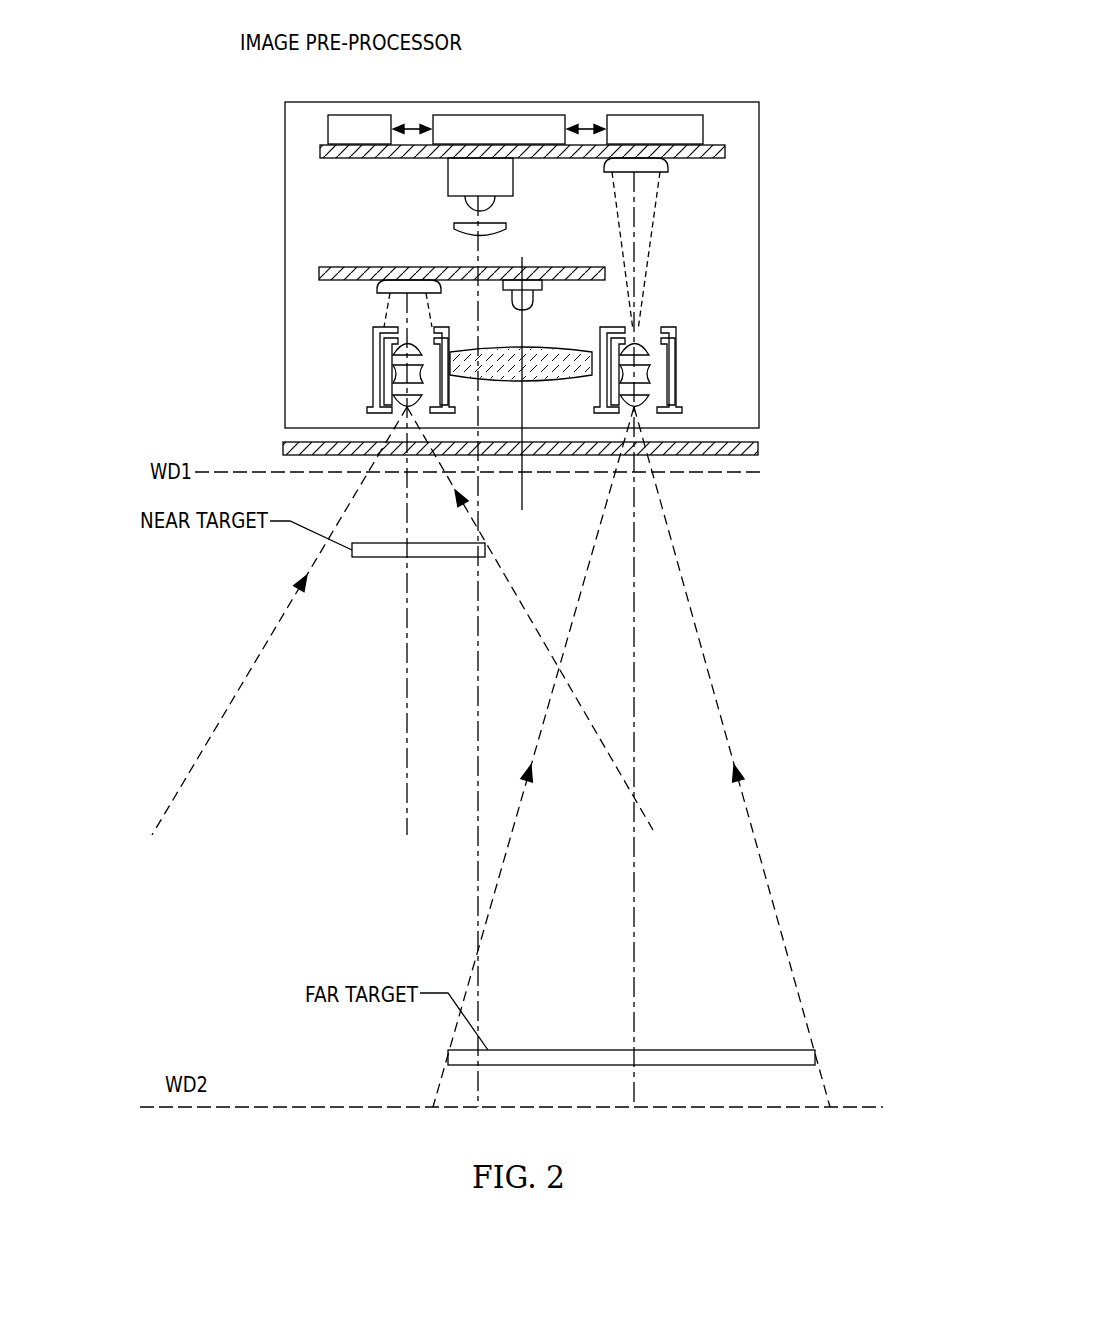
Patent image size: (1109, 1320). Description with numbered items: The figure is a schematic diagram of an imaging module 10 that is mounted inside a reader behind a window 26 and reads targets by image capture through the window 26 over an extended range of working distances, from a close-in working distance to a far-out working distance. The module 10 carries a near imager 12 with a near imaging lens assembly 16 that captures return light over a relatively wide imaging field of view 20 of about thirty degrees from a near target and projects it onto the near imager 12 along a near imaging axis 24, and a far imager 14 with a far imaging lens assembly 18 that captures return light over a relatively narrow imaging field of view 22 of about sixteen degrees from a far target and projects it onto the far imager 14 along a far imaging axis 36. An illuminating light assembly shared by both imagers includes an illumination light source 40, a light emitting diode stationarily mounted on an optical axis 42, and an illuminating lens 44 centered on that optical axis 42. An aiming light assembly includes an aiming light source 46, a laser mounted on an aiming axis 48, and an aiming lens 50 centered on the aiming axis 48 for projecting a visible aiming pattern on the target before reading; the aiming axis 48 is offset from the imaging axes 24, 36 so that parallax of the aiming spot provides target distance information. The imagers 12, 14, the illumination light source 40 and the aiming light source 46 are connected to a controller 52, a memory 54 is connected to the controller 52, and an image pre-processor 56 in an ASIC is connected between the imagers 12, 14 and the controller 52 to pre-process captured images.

The imaging module 10 is at (185, 43).
The near imager 12 is at (377, 287).
The far imager 14 is at (668, 163).
The near imaging lens assembly 16 is at (393, 353).
The far imaging lens assembly 18 is at (650, 340).
The wide imaging field of view 20 is at (338, 830).
The narrow imaging field of view 22 is at (698, 625).
The near imaging axis 24 is at (405, 606).
The window 26 is at (283, 448).
The far imaging axis 36 is at (634, 540).
The illumination light source 40 is at (533, 305).
The optical axis 42 is at (522, 488).
The illuminating lens 44 is at (571, 350).
The aiming light source 46 is at (448, 170).
The aiming axis 48 is at (476, 775).
The aiming lens 50 is at (453, 225).
The controller 52 is at (488, 115).
The memory 54 is at (648, 115).
The image pre-processor 56 is at (357, 115).